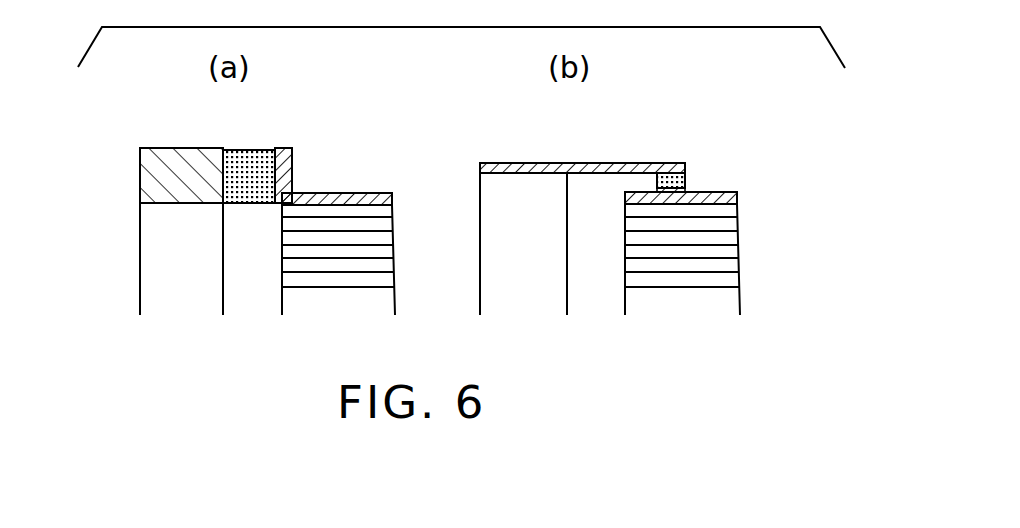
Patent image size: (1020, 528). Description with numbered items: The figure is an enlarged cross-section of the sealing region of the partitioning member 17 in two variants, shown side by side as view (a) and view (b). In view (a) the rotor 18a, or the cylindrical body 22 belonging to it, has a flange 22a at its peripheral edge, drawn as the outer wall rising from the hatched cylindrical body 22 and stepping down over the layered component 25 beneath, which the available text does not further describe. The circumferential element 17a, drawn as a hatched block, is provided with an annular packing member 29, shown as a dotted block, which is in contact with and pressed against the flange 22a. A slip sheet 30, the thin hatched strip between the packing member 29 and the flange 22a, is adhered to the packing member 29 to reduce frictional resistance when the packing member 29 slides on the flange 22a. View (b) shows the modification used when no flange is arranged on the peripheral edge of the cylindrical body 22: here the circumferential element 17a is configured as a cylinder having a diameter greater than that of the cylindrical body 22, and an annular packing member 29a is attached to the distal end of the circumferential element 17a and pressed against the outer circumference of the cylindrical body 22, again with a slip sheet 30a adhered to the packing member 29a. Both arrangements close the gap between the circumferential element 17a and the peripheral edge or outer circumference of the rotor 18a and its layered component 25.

The metal plate (electrode plate) 17 is at (600, 158).
The circumferential element 17a is at (140, 185).
The rotor 18a is at (532, 225).
The cylindrical body 22 is at (376, 194).
The flange 22a is at (293, 168).
The laminated layer body 25 is at (282, 258).
The annular packing member 29 is at (243, 150).
The annular packing member 29a is at (687, 177).
The slip sheet 30 is at (283, 148).
The slip sheet 30a is at (692, 190).